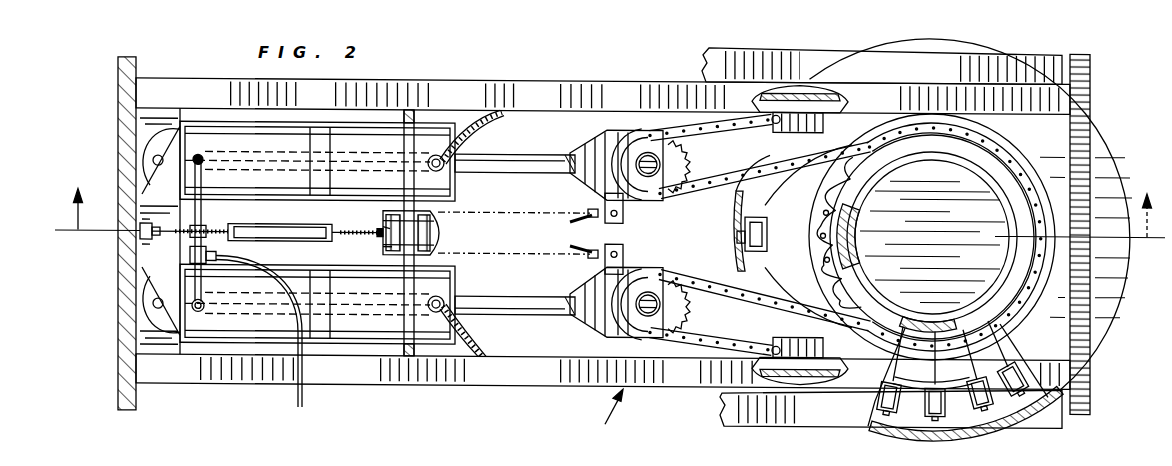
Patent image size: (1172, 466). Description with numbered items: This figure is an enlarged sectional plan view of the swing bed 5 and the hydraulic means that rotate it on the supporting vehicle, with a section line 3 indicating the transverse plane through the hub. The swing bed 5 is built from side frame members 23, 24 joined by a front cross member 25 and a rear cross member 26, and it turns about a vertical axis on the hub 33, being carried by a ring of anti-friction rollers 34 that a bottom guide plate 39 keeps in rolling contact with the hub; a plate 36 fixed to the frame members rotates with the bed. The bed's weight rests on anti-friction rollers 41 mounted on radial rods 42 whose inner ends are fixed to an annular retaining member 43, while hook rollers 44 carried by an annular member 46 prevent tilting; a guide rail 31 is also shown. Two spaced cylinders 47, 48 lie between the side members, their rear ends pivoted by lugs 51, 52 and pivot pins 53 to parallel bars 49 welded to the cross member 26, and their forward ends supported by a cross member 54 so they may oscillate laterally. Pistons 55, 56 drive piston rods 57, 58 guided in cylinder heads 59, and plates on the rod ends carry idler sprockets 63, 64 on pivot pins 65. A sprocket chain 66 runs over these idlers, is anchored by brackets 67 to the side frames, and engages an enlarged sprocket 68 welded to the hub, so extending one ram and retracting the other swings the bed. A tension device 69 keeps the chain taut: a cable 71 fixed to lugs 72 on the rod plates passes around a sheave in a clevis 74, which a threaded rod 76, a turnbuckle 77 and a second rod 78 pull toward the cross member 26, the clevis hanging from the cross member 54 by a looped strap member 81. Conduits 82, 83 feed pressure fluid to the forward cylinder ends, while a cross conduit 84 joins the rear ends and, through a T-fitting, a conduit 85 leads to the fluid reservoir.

The section line 3 is at (610, 233).
The swing bed 5 is at (765, 427).
The side frame member 23 is at (250, 376).
The side frame member 24 is at (212, 84).
The cross member 25 is at (1092, 377).
The cross member 26 is at (122, 392).
The guide rail 31 is at (708, 56).
The hub 33 is at (862, 240).
The anti-friction rollers 34 is at (855, 220).
The plate 36 is at (1112, 158).
The bottom guide plate 39 is at (813, 236).
The anti-friction rollers 41 is at (1000, 400).
The radial supporting pins or rods 42 is at (990, 350).
The annular retaining member 43 is at (940, 322).
The hook rollers 44 is at (745, 224).
The annular member 46 is at (735, 206).
The cylinder 47 is at (317, 161).
The cylinder 48 is at (317, 304).
The parallel bars 49 is at (157, 346).
The cylinder lug 51 is at (125, 178).
The cylinder lug 52 is at (130, 332).
The pivot pins 53 is at (152, 157).
The cross member 54 is at (418, 112).
The piston 55 is at (285, 168).
The piston 56 is at (294, 297).
The piston rod 57 is at (540, 158).
The piston rod 58 is at (540, 298).
The cylinder heads 59 is at (458, 194).
The idler sprocket 63 is at (645, 189).
The idler sprocket 64 is at (680, 321).
The pivot pins 65 is at (649, 172).
The sprocket chain 66 is at (1003, 146).
The brackets 67 is at (808, 115).
The enlarged sprocket 68 is at (830, 176).
The tension device 69 is at (378, 222).
The cable 71 is at (512, 218).
The lugs 72 is at (603, 193).
The clevis 74 is at (388, 248).
The threaded rod 76 is at (335, 232).
The turnbuckle 77 is at (296, 225).
The threaded rod 78 is at (222, 230).
The looped strap-like supporting member 81 is at (440, 231).
The conduit 82 is at (470, 124).
The conduit 83 is at (480, 340).
The cross conduit 84 is at (204, 288).
The conduit 85 is at (306, 398).